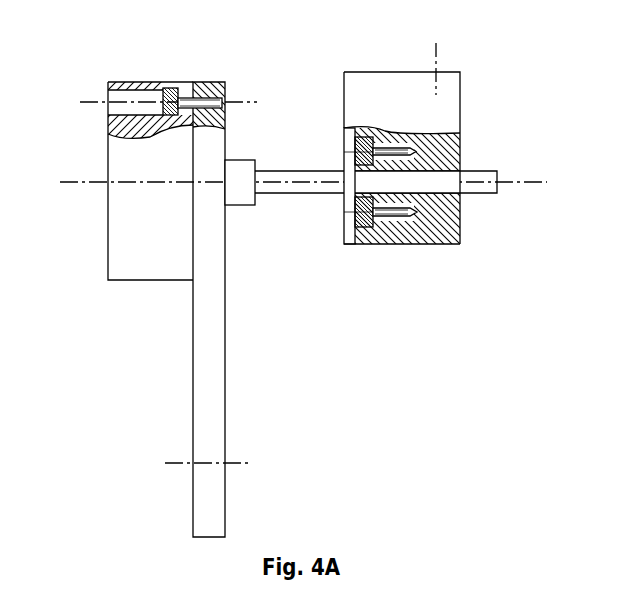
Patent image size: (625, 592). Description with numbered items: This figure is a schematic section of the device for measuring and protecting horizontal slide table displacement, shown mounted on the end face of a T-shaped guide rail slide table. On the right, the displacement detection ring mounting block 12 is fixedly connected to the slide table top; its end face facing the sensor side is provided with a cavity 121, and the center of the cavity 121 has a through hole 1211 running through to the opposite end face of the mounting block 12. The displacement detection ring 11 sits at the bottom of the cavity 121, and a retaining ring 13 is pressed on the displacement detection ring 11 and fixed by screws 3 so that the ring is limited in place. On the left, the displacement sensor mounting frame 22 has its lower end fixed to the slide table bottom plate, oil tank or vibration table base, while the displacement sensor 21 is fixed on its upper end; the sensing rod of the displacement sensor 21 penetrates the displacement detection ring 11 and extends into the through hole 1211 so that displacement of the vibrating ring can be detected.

The screw 3 is at (165, 92).
The displacement detection ring 11 is at (385, 230).
The displacement detection ring mounting block 12 is at (452, 112).
The cavity 121 is at (350, 236).
The through hole 1211 is at (460, 167).
The retaining ring 13 is at (355, 240).
The displacement sensor 21 is at (125, 273).
The displacement sensor mounting frame 22 is at (198, 385).